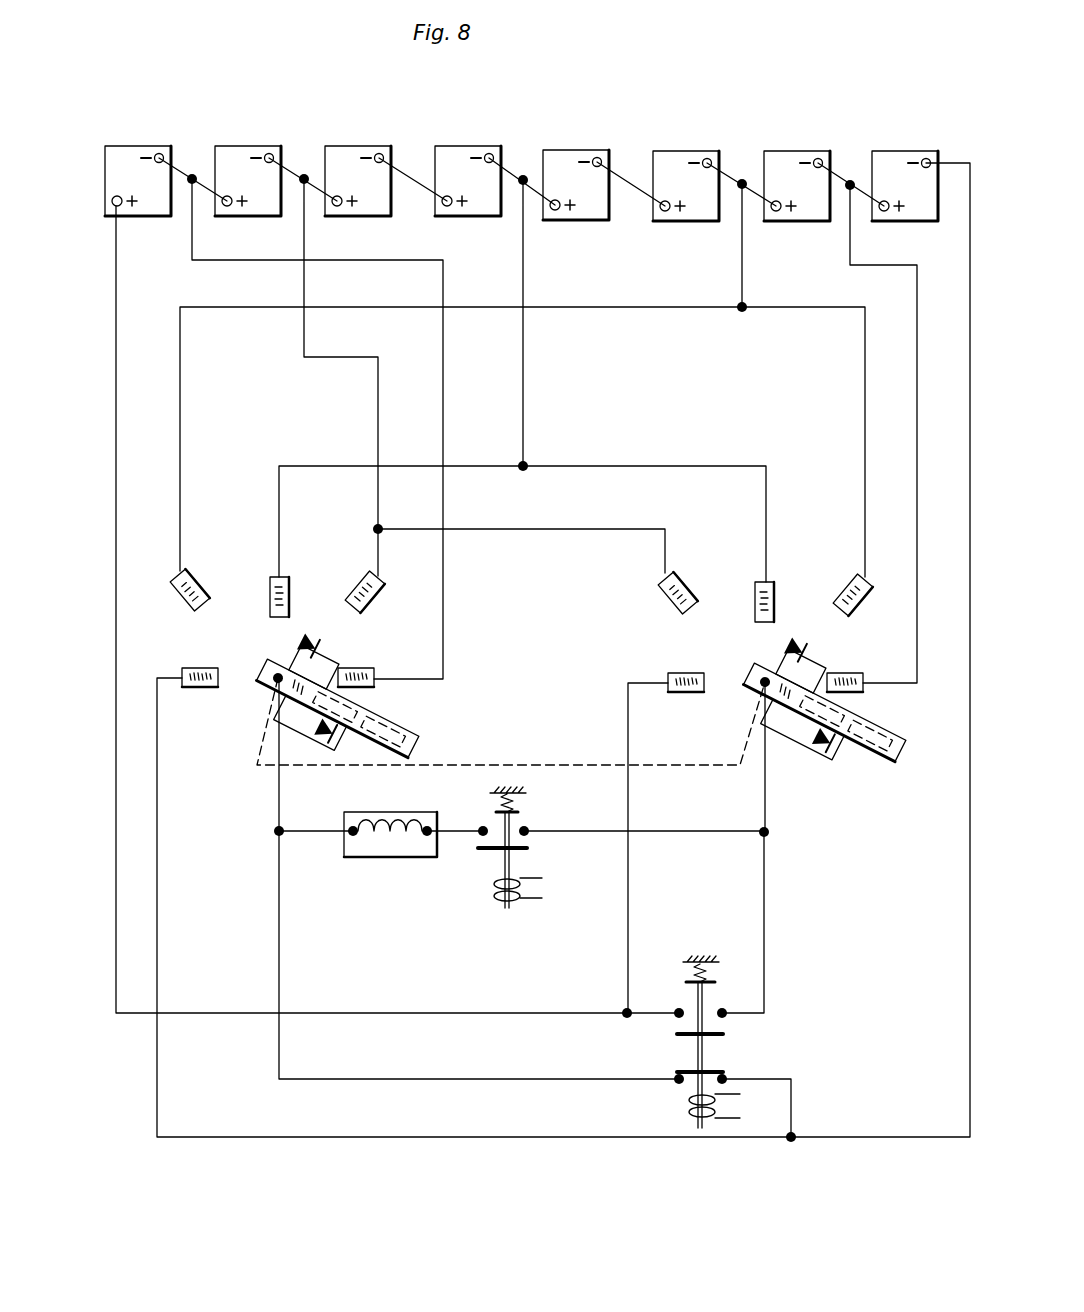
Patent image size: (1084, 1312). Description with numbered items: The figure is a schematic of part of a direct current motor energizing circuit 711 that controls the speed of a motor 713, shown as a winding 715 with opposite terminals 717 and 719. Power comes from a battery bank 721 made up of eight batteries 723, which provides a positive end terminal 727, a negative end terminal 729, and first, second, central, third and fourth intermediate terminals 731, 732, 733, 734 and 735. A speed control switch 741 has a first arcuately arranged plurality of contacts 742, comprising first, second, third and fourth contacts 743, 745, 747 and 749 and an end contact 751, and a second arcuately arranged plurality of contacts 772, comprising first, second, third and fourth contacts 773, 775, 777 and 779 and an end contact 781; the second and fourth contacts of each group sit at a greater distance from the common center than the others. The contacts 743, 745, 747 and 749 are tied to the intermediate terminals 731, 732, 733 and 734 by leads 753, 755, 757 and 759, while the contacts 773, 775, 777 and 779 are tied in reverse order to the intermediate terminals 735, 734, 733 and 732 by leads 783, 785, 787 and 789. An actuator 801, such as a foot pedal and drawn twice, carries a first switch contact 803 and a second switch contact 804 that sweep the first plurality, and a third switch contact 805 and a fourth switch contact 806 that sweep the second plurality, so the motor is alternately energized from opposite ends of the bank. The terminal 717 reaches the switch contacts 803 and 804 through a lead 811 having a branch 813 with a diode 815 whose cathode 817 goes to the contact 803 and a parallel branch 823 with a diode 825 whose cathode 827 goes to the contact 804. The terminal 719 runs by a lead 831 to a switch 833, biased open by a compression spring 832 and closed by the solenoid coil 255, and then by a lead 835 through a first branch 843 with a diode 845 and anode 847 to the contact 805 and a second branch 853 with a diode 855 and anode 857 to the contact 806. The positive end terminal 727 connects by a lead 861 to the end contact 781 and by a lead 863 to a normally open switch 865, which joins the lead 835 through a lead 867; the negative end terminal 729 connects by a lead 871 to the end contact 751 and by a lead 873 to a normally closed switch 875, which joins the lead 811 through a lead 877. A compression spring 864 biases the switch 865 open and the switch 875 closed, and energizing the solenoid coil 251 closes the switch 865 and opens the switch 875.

The battery bank 721 is at (650, 99).
The battery 723 is at (120, 150).
The positive end terminal 727 is at (118, 207).
The negative end terminal 729 is at (928, 158).
The first intermediate terminal 731 is at (193, 174).
The second intermediate terminal 732 is at (302, 186).
The central intermediate terminal 733 is at (523, 188).
The third intermediate terminal 734 is at (742, 191).
The fourth intermediate terminal 735 is at (849, 192).
The direct current motor energizing circuit 711 is at (585, 407).
The lead 753 is at (333, 268).
The lead 755 is at (376, 530).
The lead 757 is at (328, 466).
The lead 759 is at (633, 308).
The lead 783 is at (901, 266).
The lead 785 is at (813, 308).
The lead 787 is at (682, 457).
The lead 789 is at (616, 518).
The speed control switch 741 is at (611, 636).
The first arcuately arranged plurality of contacts 742 is at (246, 637).
The second arcuately arranged plurality of contacts 772 is at (738, 719).
The first contact 743 is at (370, 668).
The second contact 745 is at (380, 580).
The third contact 747 is at (270, 580).
The fourth contact 749 is at (188, 600).
The end contact 751 is at (207, 690).
The first contact 773 is at (855, 672).
The second contact 775 is at (848, 590).
The third contact 777 is at (770, 582).
The fourth contact 779 is at (665, 598).
The end contact 781 is at (668, 676).
The actuator 801 is at (418, 738).
The first switch contact 803 is at (365, 708).
The second switch contact 804 is at (405, 722).
The third switch contact 805 is at (862, 706).
The fourth switch contact 806 is at (898, 738).
The lead 811 is at (318, 830).
The branch 813 is at (290, 656).
The diode 815 is at (306, 642).
The cathode 817 is at (325, 648).
The branch 823 is at (370, 758).
The diode 825 is at (320, 735).
The cathode 827 is at (333, 746).
The first branch 843 is at (760, 660).
The diode 845 is at (798, 648).
The anode 847 is at (812, 655).
The second branch 853 is at (800, 740).
The diode 855 is at (832, 760).
The anode 857 is at (842, 752).
The lead 831 is at (483, 828).
The compression spring 832 is at (512, 806).
The switch 833 is at (528, 849).
The lead 835 is at (722, 830).
The lead 861 is at (627, 712).
The lead 863 is at (660, 1016).
The compression spring 864 is at (690, 972).
The normally open switch 865 is at (726, 1036).
The lead 867 is at (766, 905).
The lead 871 is at (160, 818).
The lead 873 is at (792, 1100).
The normally closed switch 875 is at (688, 1082).
The lead 877 is at (412, 1079).
The motor 713 is at (385, 858).
The winding 715 is at (366, 845).
The terminal 717 is at (350, 835).
The terminal 719 is at (425, 838).
The solenoid coil 255 is at (515, 903).
The solenoid coil 251 is at (730, 1140).